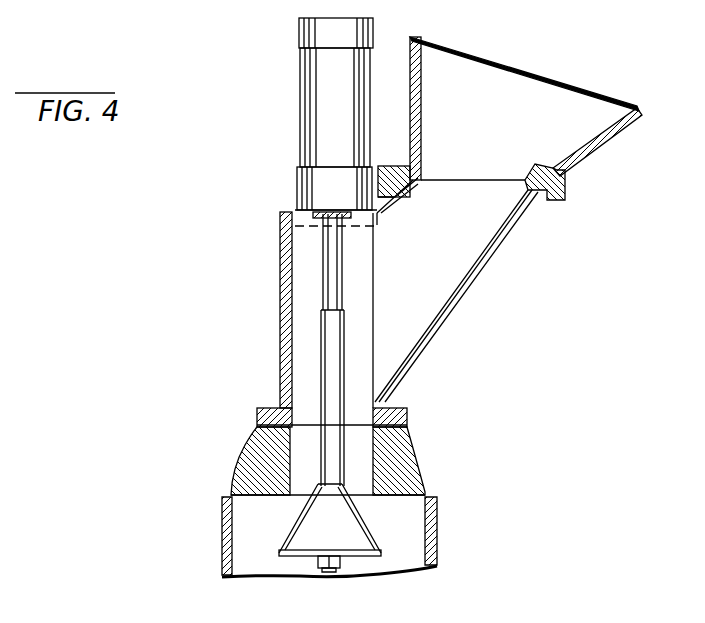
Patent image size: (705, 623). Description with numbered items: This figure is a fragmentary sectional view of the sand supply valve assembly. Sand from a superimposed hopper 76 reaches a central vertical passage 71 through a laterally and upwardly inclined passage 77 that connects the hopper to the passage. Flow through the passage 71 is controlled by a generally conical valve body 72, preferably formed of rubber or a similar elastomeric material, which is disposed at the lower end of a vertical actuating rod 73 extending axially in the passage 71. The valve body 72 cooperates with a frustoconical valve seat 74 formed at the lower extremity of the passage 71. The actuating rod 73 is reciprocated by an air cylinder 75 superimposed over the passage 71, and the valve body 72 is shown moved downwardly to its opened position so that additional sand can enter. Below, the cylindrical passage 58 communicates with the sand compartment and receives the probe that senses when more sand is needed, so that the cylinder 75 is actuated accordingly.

The cylindrical passage 58 is at (233, 568).
The central vertical passage 71 is at (292, 344).
The valve body 72 is at (352, 539).
The actuating rod 73 is at (344, 331).
The valve seat 74 is at (370, 498).
The air cylinder 75 is at (312, 121).
The hopper 76 is at (558, 88).
The inclined passage 77 is at (460, 263).